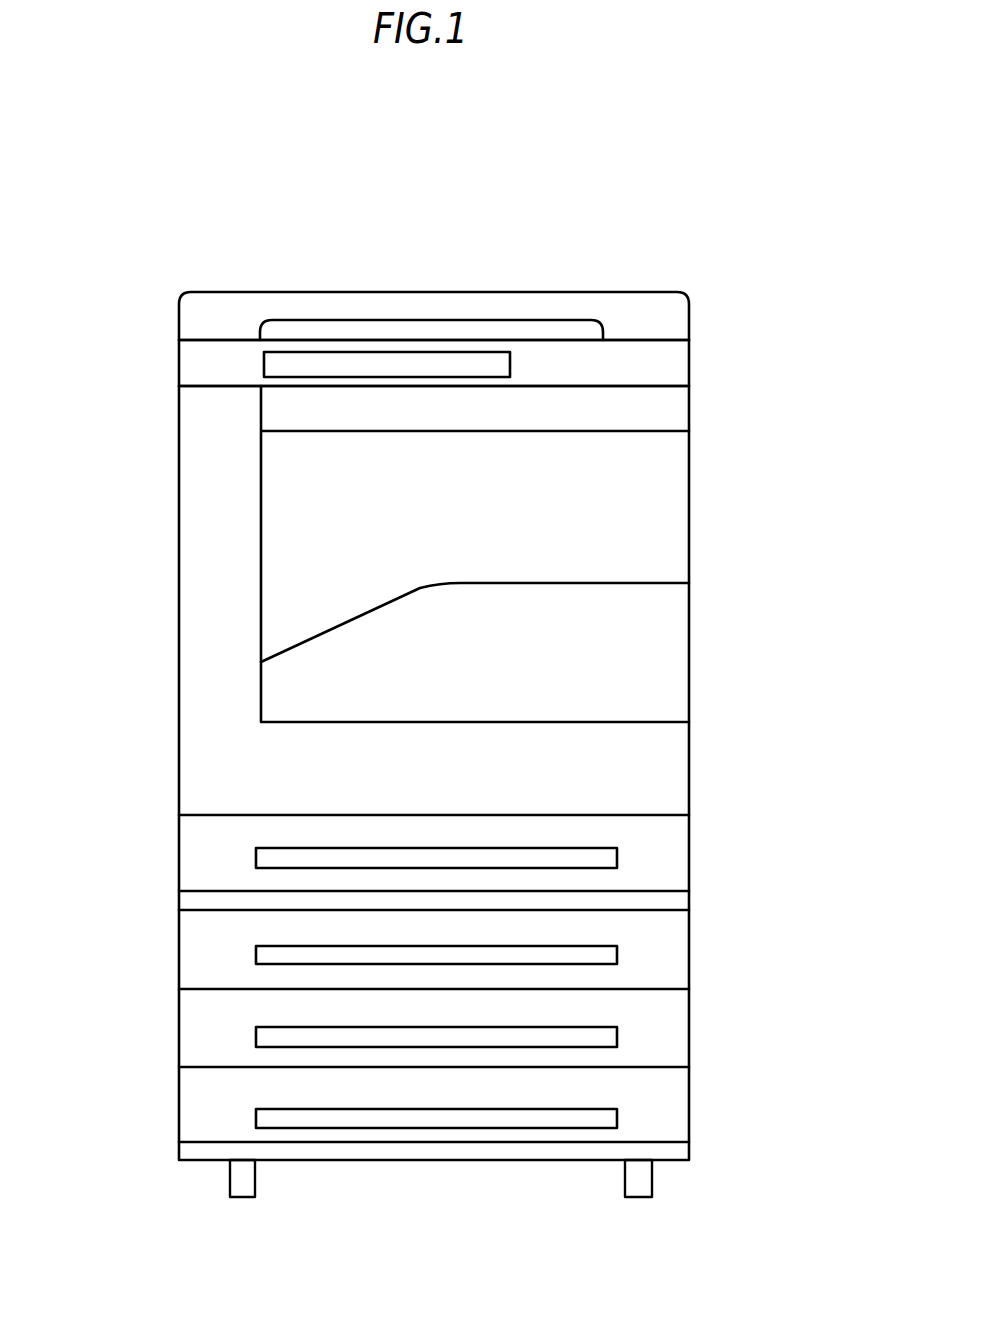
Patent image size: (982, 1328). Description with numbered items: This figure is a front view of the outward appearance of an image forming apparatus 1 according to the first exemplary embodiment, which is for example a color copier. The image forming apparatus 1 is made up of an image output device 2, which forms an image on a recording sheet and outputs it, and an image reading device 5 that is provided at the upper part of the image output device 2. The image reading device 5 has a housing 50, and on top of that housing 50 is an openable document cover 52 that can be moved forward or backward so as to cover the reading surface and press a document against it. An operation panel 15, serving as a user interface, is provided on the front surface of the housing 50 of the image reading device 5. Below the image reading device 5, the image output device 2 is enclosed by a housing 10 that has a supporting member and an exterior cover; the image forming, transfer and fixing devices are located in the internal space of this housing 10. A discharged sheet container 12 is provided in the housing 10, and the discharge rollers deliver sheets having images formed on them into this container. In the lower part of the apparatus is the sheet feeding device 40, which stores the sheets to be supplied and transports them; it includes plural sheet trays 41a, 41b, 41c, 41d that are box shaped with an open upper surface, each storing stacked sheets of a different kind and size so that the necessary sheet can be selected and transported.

The image forming apparatus 1 is at (184, 213).
The image output device 2 is at (118, 1158).
The image reading device 5 is at (118, 292).
The housing 10 is at (702, 650).
The discharged sheet container 12 is at (640, 583).
The operation panel 15 is at (390, 363).
The sheet feeding device 40 is at (790, 855).
The sheet tray 41a is at (662, 867).
The sheet tray 41b is at (662, 959).
The sheet tray 41c is at (662, 1042).
The sheet tray 41d is at (662, 1118).
The housing 50 is at (702, 365).
The document cover 52 is at (601, 303).